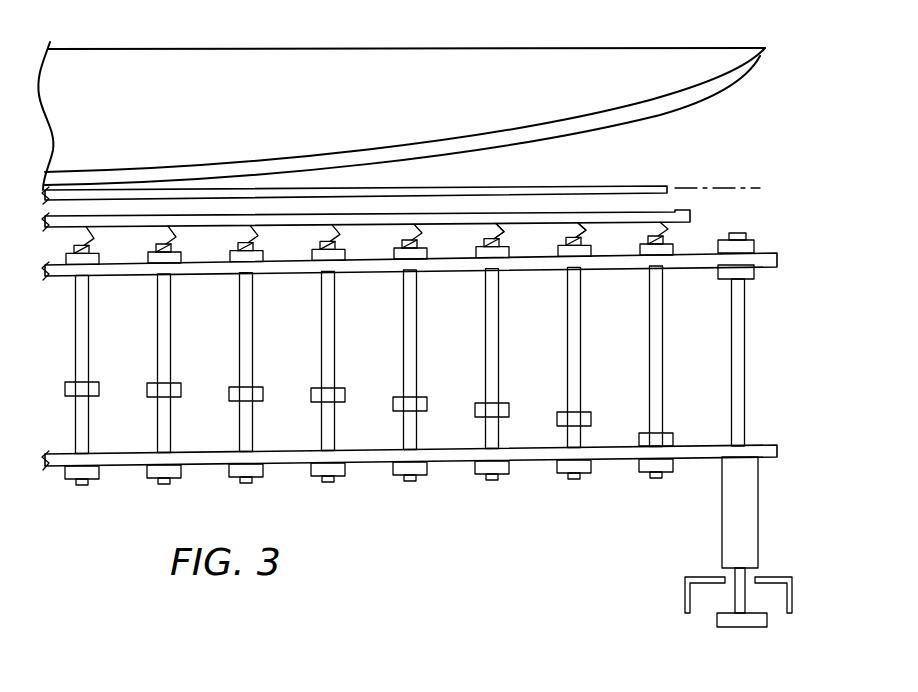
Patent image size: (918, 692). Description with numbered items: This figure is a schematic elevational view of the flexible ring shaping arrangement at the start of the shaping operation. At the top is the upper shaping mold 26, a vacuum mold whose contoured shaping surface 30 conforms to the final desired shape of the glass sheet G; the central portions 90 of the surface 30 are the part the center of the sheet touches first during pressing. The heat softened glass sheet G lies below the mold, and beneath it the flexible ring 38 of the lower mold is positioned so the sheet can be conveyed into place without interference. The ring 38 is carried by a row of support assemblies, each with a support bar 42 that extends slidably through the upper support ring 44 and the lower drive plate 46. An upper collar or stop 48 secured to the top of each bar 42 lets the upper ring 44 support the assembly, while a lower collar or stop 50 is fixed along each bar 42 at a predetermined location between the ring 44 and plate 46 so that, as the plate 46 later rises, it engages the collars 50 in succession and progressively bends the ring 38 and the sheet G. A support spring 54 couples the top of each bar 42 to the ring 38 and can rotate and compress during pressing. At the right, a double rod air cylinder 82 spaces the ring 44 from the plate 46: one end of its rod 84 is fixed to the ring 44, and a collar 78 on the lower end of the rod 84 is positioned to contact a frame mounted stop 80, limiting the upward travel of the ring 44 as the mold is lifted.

The upper shaping mold 26 is at (500, 47).
The central portions of surface 90 is at (700, 110).
The contoured shaping surface 30 is at (640, 123).
The glass sheet G is at (606, 186).
The flexible ring 38 is at (678, 215).
The upper support ring 44 is at (61, 276).
The lower drive plate 46 is at (58, 468).
The upper collar or stop 48 is at (316, 256).
The support bar 42 is at (408, 335).
The lower collar or stop 50 is at (231, 387).
The support spring 54 is at (574, 228).
The rod 84 is at (745, 330).
The double rod air cylinder 82 is at (728, 500).
The stop 80 is at (683, 582).
The collar 78 is at (737, 626).